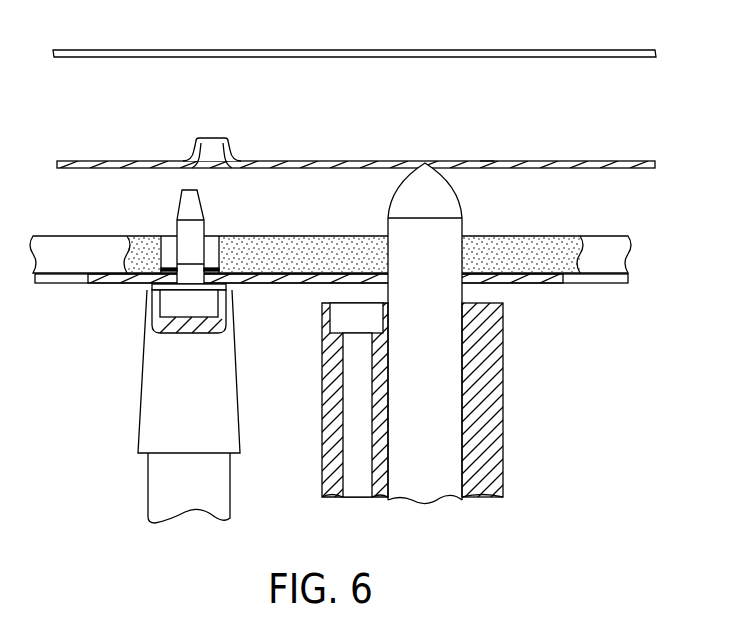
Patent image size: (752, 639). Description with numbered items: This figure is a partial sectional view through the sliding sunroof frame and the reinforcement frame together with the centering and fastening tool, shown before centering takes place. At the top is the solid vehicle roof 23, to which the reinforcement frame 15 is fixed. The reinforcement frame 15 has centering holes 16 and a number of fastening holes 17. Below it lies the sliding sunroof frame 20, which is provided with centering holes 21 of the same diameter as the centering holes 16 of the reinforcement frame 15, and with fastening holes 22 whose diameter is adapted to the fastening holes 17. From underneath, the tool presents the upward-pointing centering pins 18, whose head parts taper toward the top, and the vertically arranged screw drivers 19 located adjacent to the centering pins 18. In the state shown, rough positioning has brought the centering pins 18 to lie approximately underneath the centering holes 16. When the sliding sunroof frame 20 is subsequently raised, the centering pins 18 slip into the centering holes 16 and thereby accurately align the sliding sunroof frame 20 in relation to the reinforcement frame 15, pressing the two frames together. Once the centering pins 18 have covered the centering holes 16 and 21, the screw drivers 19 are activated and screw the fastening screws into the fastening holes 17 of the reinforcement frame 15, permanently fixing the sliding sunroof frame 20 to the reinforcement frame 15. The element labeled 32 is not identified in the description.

The reinforcement frame 15 is at (535, 162).
The centering holes 16 is at (487, 162).
The fastening holes 17 is at (210, 147).
The centering pins 18 is at (410, 373).
The screw drivers 19 is at (143, 390).
The sliding sunroof frame 20 is at (103, 283).
The centering holes 21 is at (392, 277).
The fastening holes 22 is at (210, 277).
The solid vehicle roof 23 is at (488, 51).
The alignment pin 32 is at (184, 228).